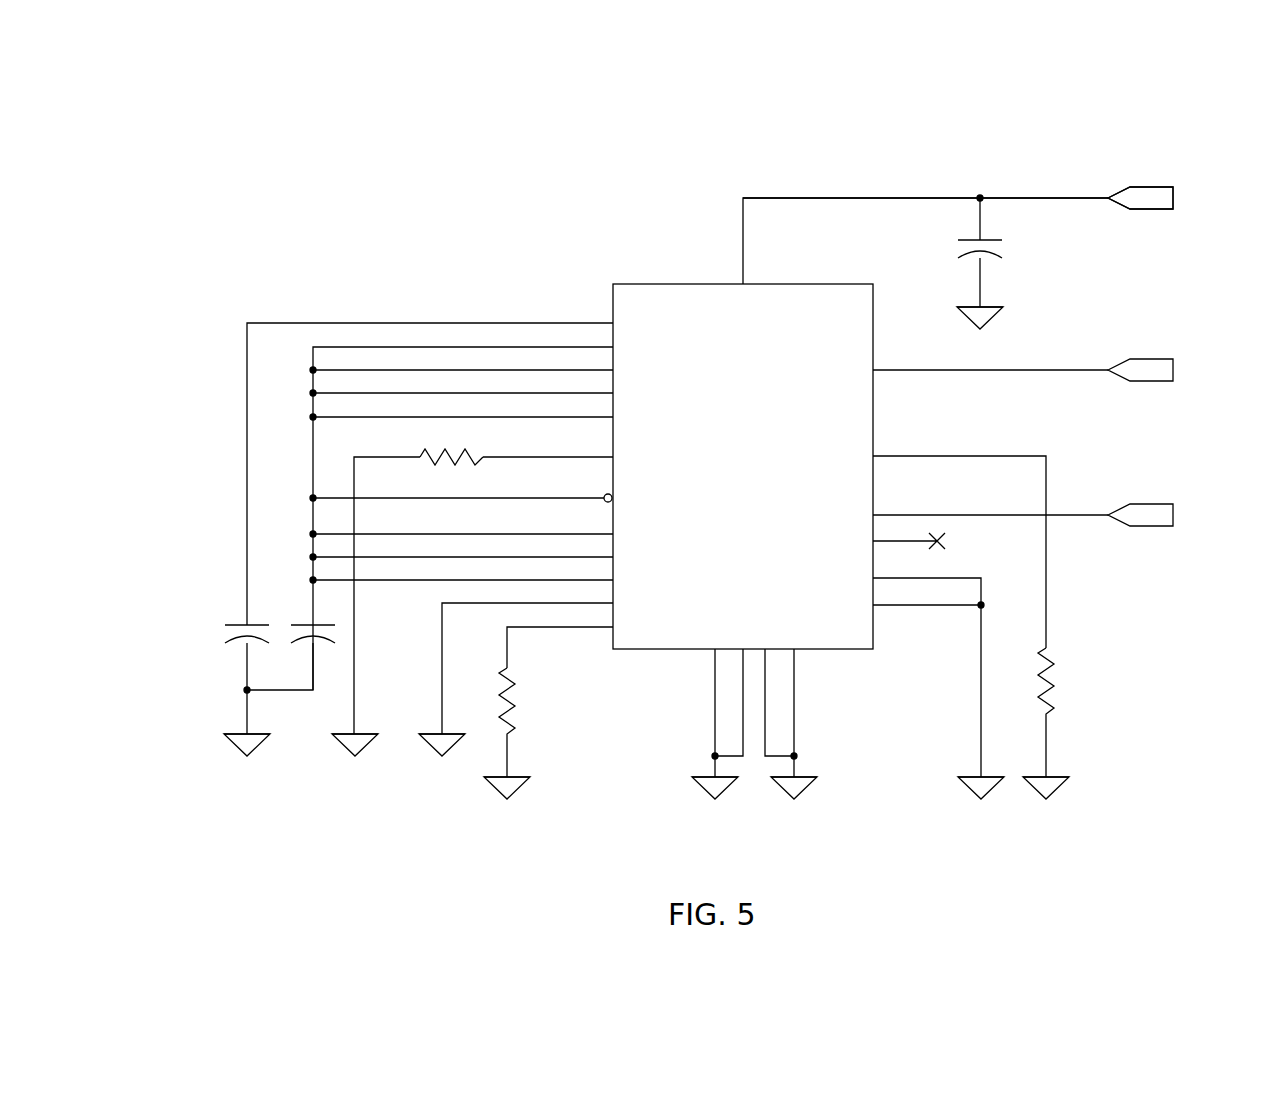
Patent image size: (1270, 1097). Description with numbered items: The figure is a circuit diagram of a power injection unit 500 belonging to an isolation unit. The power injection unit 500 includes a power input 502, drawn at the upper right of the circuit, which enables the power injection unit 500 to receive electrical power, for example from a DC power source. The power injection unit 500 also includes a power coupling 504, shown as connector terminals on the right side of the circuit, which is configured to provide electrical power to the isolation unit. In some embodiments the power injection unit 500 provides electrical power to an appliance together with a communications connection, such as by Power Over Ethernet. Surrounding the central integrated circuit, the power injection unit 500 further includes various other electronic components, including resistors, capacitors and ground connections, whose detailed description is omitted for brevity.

The power injection unit 500 is at (445, 802).
The power input 502 is at (1150, 170).
The power coupling 504 is at (1168, 211).